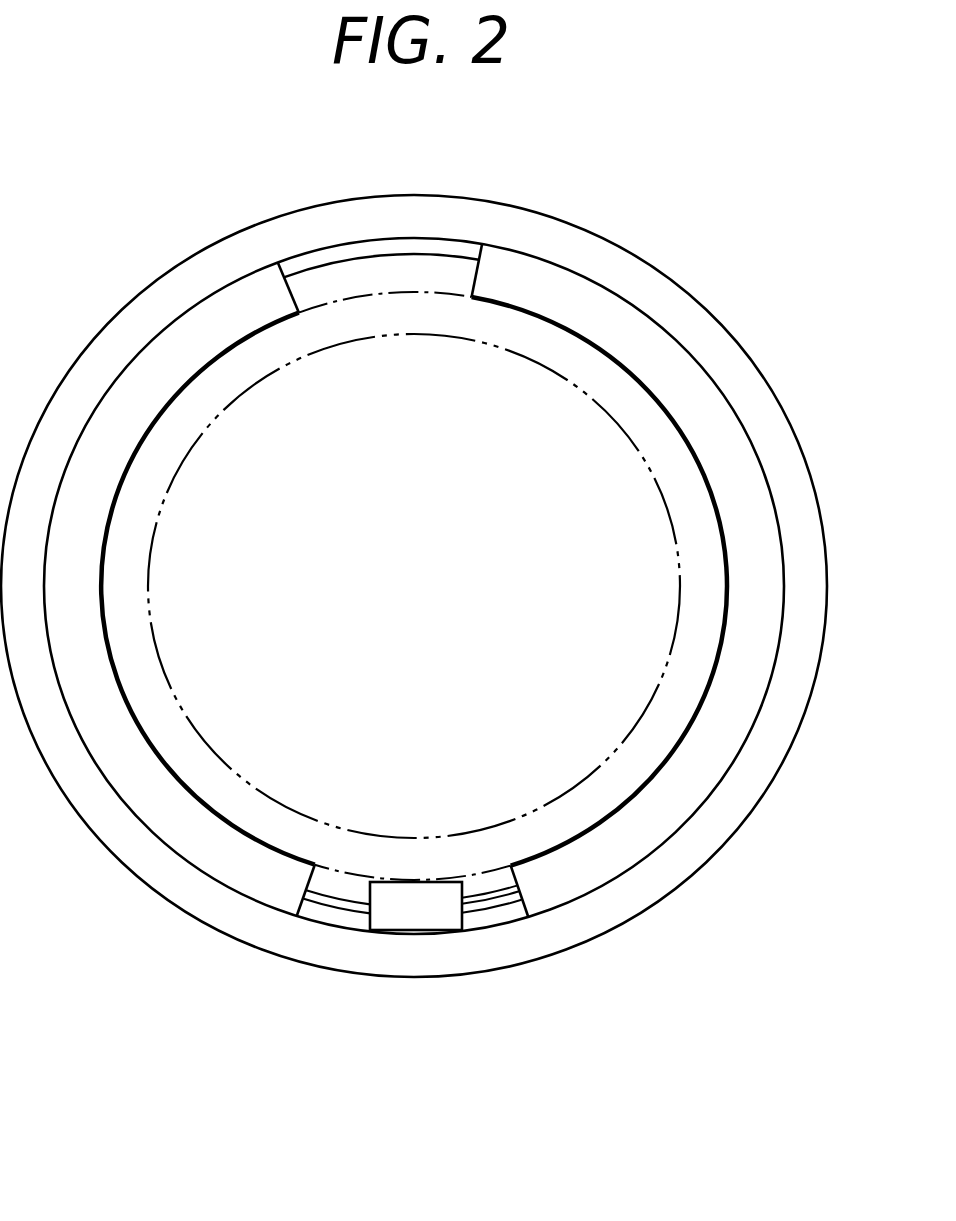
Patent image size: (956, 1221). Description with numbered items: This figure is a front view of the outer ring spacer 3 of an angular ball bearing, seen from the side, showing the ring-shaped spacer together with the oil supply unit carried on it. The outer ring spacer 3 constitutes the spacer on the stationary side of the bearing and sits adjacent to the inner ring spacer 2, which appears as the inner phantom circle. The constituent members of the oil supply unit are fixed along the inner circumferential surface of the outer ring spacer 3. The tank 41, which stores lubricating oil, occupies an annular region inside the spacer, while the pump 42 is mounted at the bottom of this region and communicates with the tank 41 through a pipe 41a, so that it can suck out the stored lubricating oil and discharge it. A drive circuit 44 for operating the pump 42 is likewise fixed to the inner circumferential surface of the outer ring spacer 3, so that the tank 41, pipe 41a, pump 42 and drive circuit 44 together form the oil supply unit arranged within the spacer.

The inner ring spacer 2 is at (405, 305).
The outer ring spacer 3 is at (638, 272).
The tank 41 is at (743, 678).
The pipe 41a is at (488, 900).
The pump 42 is at (407, 905).
The drive circuit 44 is at (205, 837).